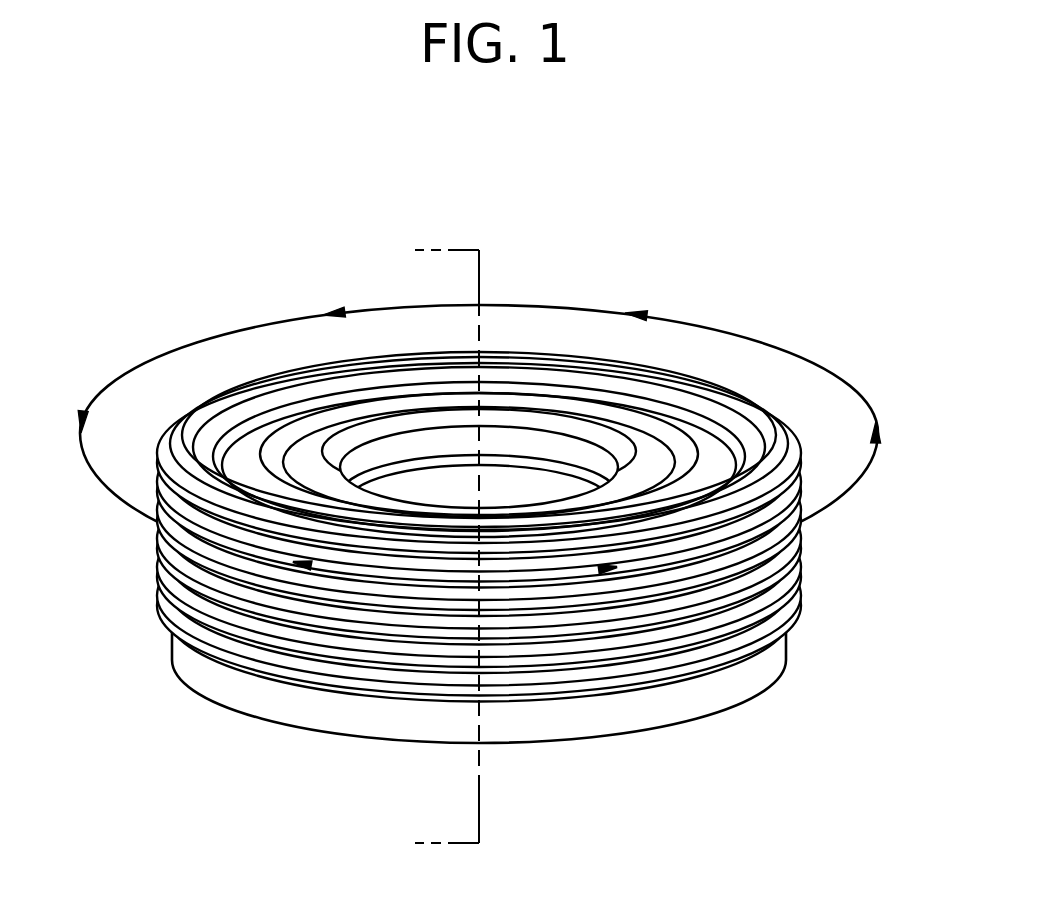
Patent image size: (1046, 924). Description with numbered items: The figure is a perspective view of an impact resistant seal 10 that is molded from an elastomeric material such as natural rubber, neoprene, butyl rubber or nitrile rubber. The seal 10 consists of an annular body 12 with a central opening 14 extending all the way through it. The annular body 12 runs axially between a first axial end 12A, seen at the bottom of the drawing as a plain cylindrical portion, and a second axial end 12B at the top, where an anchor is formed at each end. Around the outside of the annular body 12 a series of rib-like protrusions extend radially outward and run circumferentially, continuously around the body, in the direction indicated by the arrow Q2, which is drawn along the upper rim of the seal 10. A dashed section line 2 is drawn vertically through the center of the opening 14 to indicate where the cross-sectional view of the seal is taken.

The impact resistant seal 10 is at (789, 224).
The annular body 12 is at (814, 449).
The first axial end 12A is at (700, 750).
The second axial end 12B is at (538, 448).
The opening 14 is at (450, 477).
The arrow Q2 is at (770, 345).
The section line 2- 2 is at (434, 549).